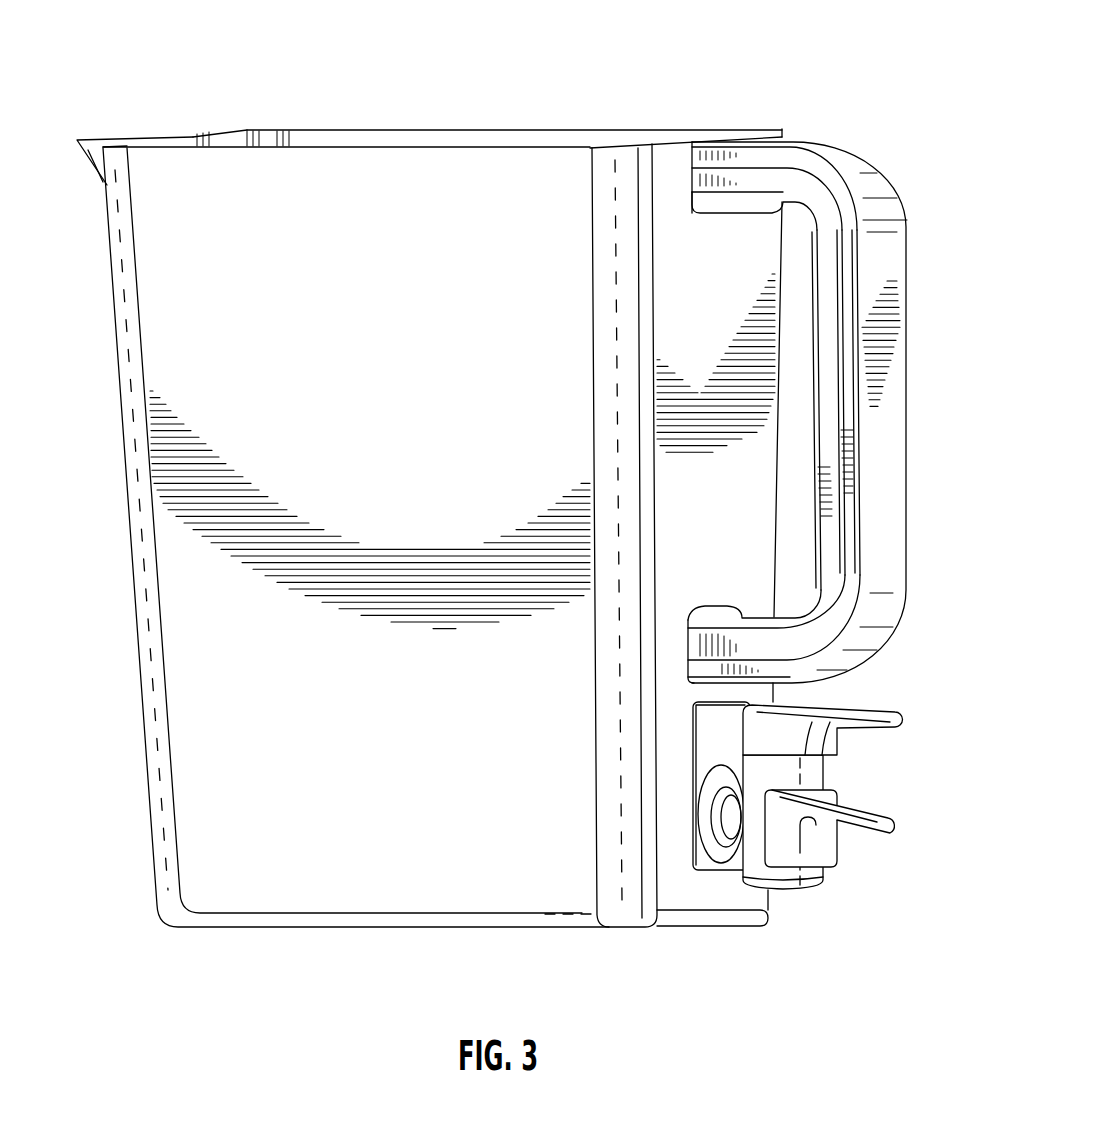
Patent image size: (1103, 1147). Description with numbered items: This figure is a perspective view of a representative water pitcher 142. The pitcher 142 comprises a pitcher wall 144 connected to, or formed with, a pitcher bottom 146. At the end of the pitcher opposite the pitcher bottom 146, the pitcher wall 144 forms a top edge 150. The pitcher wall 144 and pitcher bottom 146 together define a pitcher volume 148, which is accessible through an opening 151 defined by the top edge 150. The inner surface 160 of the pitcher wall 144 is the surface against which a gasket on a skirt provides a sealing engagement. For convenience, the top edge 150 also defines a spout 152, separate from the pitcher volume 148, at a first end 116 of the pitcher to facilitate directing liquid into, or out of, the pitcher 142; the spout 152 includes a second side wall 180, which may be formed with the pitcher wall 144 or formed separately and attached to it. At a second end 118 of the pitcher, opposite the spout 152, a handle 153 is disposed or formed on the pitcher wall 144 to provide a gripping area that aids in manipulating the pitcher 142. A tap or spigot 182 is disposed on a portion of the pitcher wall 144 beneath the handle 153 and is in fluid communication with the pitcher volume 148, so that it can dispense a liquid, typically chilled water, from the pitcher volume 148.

The first end 116 is at (103, 221).
The second end 118 is at (810, 126).
The pitcher 142 is at (845, 66).
The pitcher wall 144 is at (207, 730).
The pitcher bottom 146 is at (583, 927).
The pitcher volume 148 is at (356, 134).
The top edge 150 is at (592, 128).
The opening 151 is at (471, 135).
The spout 152 is at (92, 138).
The handle 153 is at (893, 442).
The inner surface 160 is at (320, 138).
The second side wall 180 is at (88, 153).
The spigot 182 is at (883, 878).